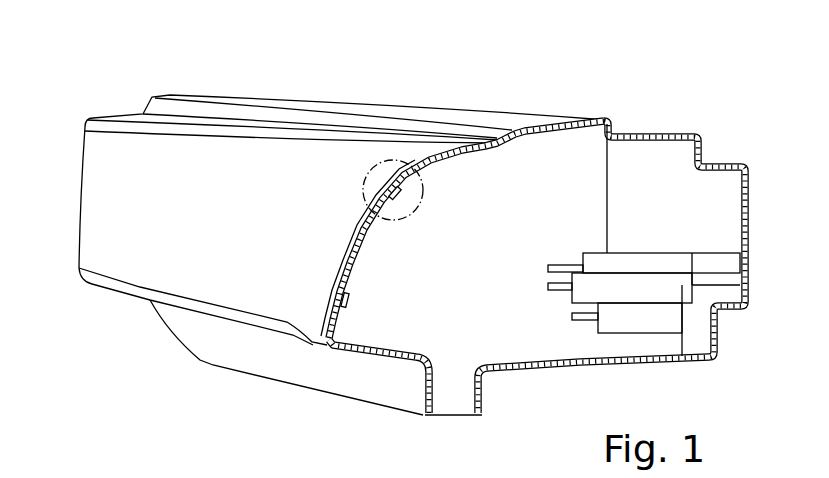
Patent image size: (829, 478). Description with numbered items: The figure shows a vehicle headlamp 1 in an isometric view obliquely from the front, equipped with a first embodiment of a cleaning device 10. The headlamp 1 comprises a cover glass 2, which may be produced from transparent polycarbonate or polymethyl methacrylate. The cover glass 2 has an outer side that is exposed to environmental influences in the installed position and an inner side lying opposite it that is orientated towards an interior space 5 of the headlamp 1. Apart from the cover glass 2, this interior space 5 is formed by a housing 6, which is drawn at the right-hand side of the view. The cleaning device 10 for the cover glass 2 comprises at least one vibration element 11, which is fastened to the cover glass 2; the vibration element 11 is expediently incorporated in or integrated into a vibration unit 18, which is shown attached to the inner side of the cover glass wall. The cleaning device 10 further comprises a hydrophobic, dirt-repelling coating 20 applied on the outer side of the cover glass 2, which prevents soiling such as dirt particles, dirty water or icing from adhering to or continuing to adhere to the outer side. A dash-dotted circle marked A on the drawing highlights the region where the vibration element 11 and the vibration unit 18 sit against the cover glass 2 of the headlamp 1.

The vehicle headlamp 1 is at (112, 322).
The cover glass 2 is at (128, 178).
The interior space 5 is at (490, 283).
The housing 6 is at (733, 135).
The cleaning device 10 is at (397, 175).
The vibration element 11 is at (404, 188).
The vibration unit 18 is at (398, 195).
The hydrophobic, dirt-repelling coating 20 is at (200, 217).
The detail region A is at (365, 170).